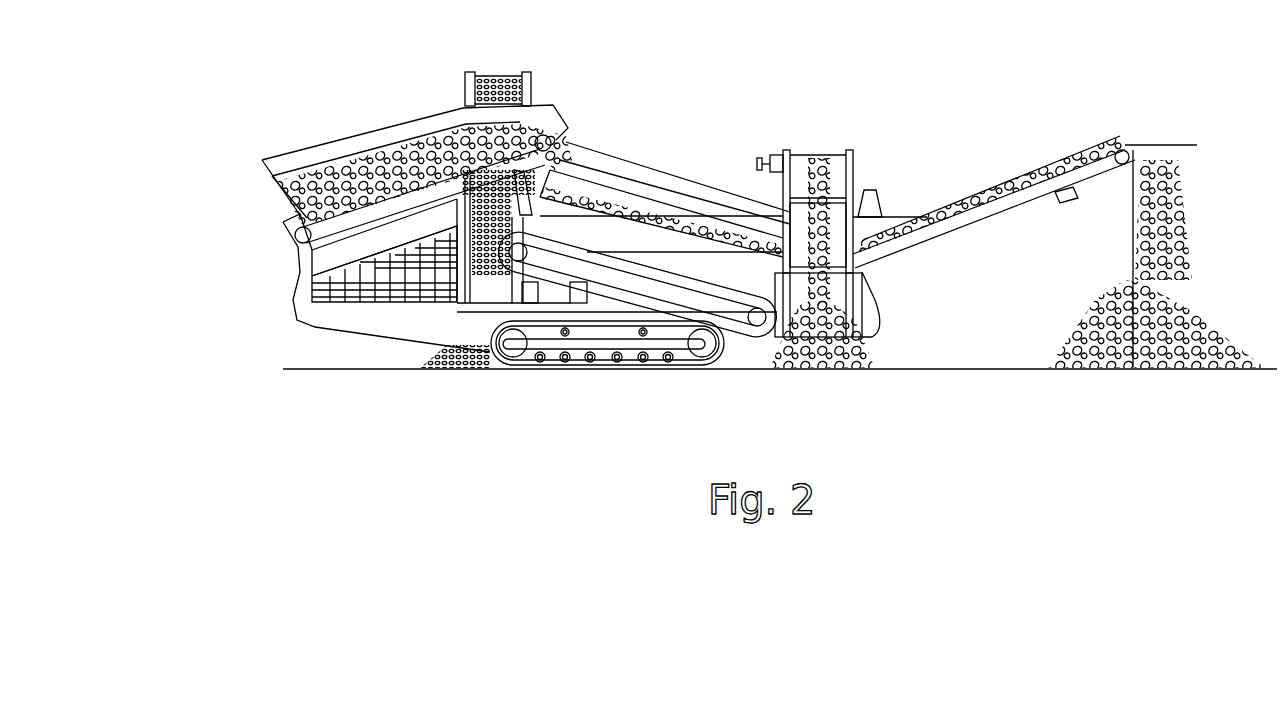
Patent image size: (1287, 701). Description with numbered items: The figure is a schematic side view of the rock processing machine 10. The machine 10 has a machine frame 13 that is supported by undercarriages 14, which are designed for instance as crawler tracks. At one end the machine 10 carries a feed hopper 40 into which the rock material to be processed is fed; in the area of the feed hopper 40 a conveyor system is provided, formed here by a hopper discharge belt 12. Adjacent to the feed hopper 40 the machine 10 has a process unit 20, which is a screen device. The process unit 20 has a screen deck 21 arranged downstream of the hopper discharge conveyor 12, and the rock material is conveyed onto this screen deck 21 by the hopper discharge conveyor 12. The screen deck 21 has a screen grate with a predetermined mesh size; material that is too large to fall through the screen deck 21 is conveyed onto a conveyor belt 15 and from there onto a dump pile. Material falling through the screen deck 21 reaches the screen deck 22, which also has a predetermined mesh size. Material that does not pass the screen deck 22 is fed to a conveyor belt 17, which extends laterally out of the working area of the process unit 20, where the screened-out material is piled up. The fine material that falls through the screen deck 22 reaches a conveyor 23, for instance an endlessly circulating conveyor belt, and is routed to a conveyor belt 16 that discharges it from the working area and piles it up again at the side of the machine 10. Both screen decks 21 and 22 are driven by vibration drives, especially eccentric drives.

The rock processing machine 10 is at (651, 134).
The hopper discharge belt 12 is at (300, 220).
The machine frame 13 is at (407, 320).
The undercarriages 14 is at (607, 346).
The conveyor belt 15 is at (1038, 174).
The conveyor belt 16 is at (531, 86).
The conveyor belt 17 is at (855, 165).
The process unit 20 is at (746, 188).
The screen deck 21 is at (688, 214).
The screen deck 22 is at (628, 215).
The conveyor 23 is at (732, 313).
The feed hopper 40 is at (430, 132).